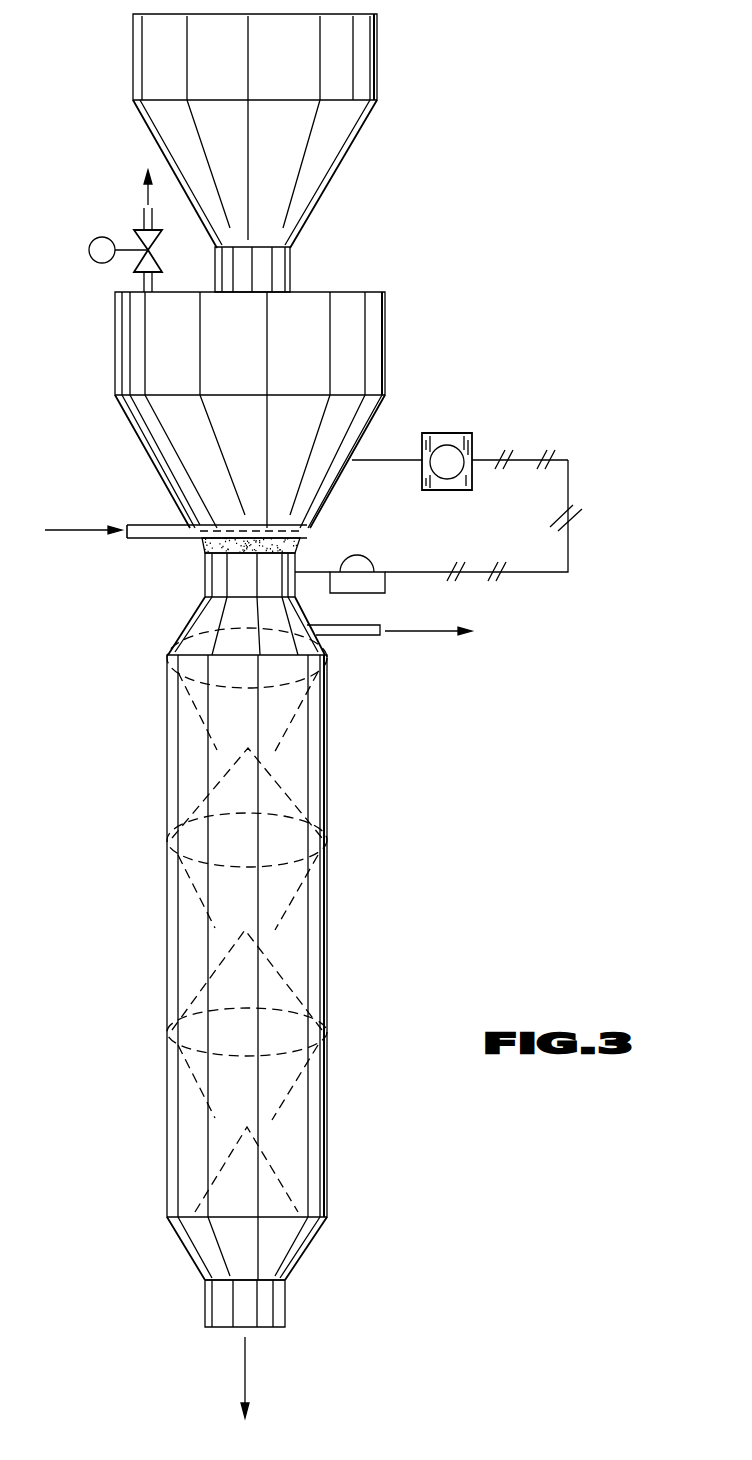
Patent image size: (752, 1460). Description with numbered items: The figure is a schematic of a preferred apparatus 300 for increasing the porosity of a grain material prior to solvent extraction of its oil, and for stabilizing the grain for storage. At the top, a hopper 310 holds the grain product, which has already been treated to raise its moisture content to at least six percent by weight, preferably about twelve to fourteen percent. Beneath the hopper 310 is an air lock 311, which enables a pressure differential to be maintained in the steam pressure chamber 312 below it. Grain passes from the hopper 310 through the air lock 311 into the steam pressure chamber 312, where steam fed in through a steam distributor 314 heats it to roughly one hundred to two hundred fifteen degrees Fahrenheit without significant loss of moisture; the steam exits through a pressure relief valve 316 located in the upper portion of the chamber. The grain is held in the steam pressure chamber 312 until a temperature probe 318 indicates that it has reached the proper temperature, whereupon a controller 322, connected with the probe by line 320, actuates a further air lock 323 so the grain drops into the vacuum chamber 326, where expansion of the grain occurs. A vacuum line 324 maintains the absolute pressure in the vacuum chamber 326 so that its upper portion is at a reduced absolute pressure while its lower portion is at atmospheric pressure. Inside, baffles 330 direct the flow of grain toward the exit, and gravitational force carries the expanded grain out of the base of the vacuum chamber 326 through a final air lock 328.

The apparatus 300 is at (557, 368).
The hopper 310 is at (385, 70).
The air lock 311 is at (292, 270).
The steam pressure chamber 312 is at (388, 402).
The steam distributor 314 is at (195, 538).
The pressure relief valve 316 is at (134, 240).
The temperature probe 318 is at (372, 462).
The gas recirculation line 320 is at (568, 480).
The controller 322 is at (385, 580).
The air lock 323 is at (205, 575).
The vacuum line 324 is at (438, 632).
The vacuum chamber 326 is at (303, 943).
The air lock 328 is at (288, 1296).
The baffles 330 is at (220, 1163).